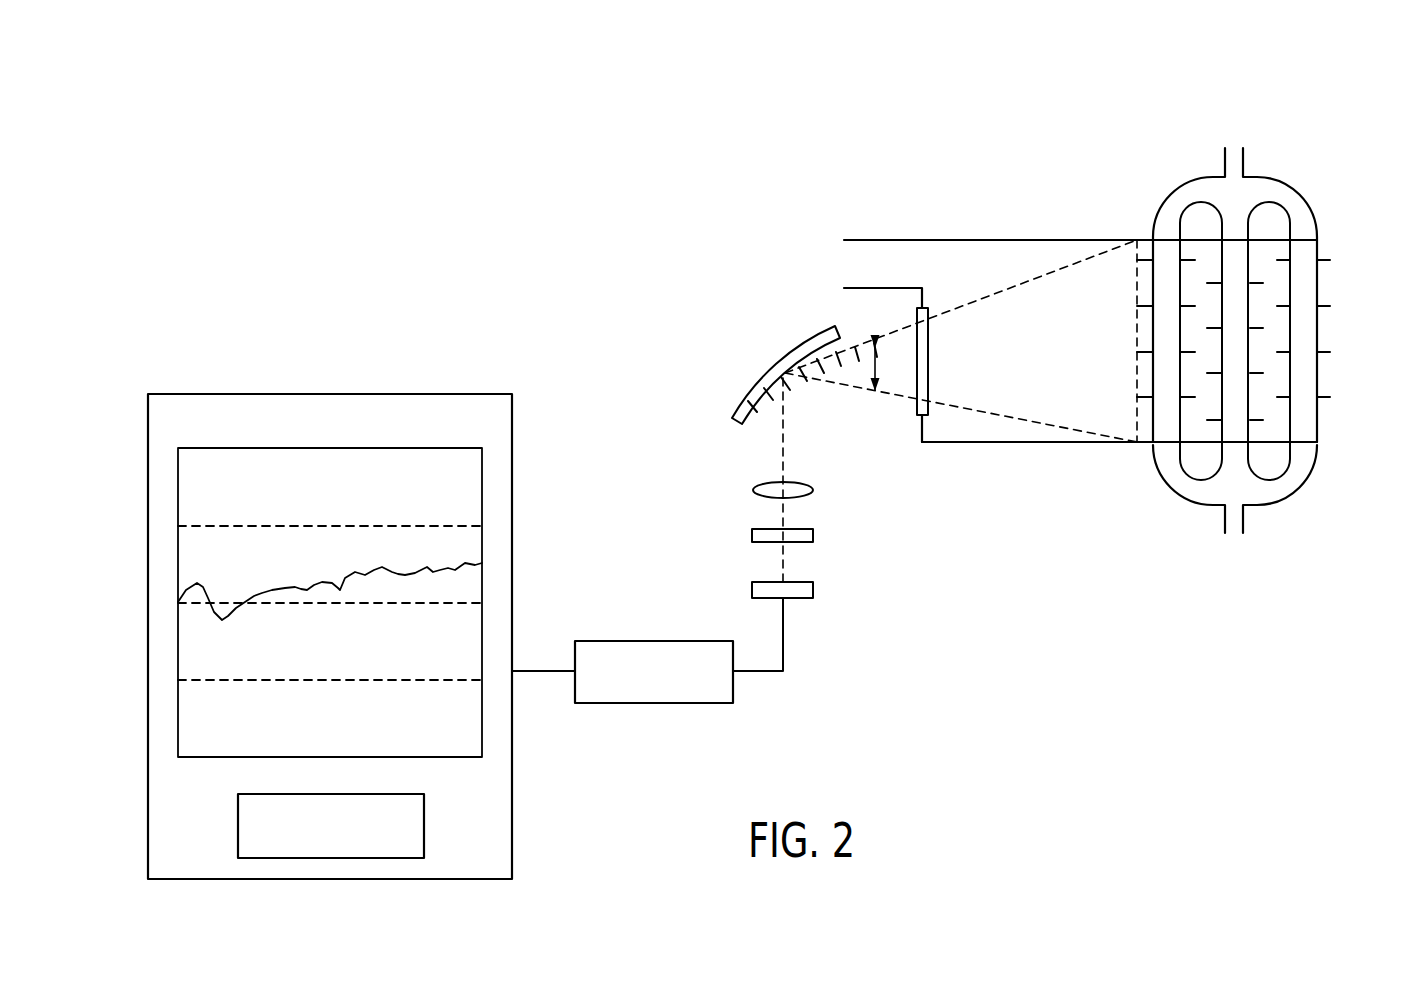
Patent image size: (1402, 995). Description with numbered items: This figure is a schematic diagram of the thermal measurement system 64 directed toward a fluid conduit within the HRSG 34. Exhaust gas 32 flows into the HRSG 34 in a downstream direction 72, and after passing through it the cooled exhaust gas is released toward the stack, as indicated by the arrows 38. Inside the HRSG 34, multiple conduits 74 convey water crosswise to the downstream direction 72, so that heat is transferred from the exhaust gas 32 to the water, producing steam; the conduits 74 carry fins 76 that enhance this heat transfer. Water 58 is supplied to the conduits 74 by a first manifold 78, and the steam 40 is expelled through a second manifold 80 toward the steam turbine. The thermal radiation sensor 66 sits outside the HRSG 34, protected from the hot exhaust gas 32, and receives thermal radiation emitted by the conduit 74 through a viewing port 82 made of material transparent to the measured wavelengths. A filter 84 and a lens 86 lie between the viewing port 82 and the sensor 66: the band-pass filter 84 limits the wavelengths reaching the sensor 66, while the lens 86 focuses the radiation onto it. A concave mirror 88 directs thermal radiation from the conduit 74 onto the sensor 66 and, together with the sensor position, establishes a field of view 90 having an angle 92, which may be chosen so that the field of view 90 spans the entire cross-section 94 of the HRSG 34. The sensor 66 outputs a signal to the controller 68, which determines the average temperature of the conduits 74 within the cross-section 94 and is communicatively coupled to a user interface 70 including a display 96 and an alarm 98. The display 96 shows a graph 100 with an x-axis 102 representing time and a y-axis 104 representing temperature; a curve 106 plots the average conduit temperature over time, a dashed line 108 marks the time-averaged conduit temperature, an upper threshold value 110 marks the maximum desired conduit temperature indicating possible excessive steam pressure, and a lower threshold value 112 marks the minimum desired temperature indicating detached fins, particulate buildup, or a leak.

The exhaust gas 32 is at (840, 263).
The HRSG 34 is at (903, 240).
The arrows 38 is at (1332, 340).
The steam 40 is at (1234, 602).
The water 58 is at (1234, 143).
The thermal measurement system 64 is at (672, 526).
The thermal radiation sensor 66 is at (800, 582).
The controller 68 is at (651, 704).
The user interface 70 is at (330, 393).
The downstream direction 72 is at (982, 208).
The conduits 74 is at (1153, 428).
The fins 76 is at (1252, 282).
The first manifold 78 is at (1298, 192).
The second manifold 80 is at (1290, 497).
The viewing port 82 is at (930, 365).
The filter 84 is at (800, 529).
The lens 86 is at (802, 486).
The mirror 88 is at (766, 372).
The field of view 90 is at (1090, 258).
The angle 92 is at (878, 367).
The cross-section 94 is at (1137, 352).
The display 96 is at (460, 447).
The alarm 98 is at (424, 826).
The graph 100 is at (217, 698).
The x-axis 102 is at (412, 757).
The y-axis 104 is at (178, 474).
The curve 106 is at (334, 568).
The dashed line 108 is at (467, 603).
The upper threshold value 110 is at (330, 526).
The lower threshold value 112 is at (443, 681).